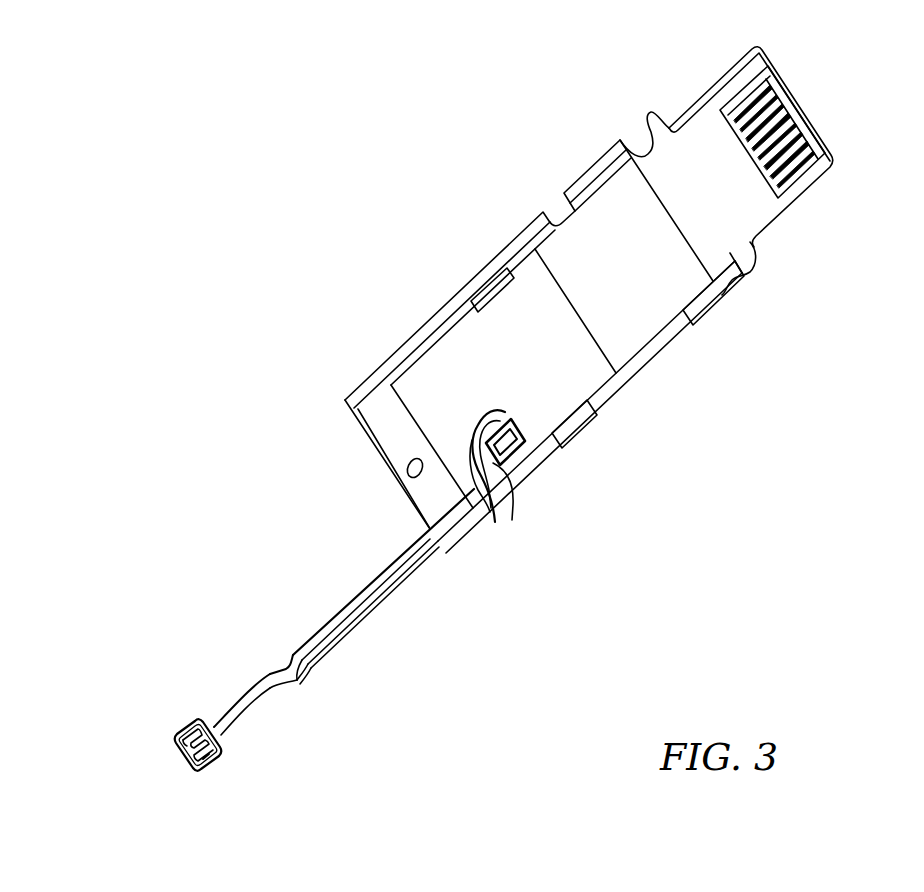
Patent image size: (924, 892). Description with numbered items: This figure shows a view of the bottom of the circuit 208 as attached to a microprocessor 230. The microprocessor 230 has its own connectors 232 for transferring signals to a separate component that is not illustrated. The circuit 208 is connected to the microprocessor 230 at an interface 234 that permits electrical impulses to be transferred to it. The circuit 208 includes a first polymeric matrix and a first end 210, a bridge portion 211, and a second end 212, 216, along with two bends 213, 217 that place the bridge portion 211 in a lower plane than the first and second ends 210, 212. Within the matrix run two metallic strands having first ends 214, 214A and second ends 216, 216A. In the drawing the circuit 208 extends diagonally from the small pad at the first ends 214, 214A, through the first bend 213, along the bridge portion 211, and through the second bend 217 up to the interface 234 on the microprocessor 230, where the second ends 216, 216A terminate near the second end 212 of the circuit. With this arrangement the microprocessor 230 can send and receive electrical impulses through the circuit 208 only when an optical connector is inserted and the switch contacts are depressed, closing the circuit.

The microprocessor 230 is at (447, 302).
The connectors 232 is at (783, 130).
The bridge portion 211 is at (366, 590).
The bend 213 is at (285, 668).
The first end 210 is at (198, 714).
The first end of metallic strand 214 is at (180, 718).
The first end of metallic strand 214A is at (206, 775).
The interface 234 is at (490, 428).
The second end 216 is at (520, 433).
The second end of metallic strand 216A is at (513, 433).
The bend 217 is at (495, 503).
The second end 212 is at (492, 465).
The circuit 208 is at (233, 753).